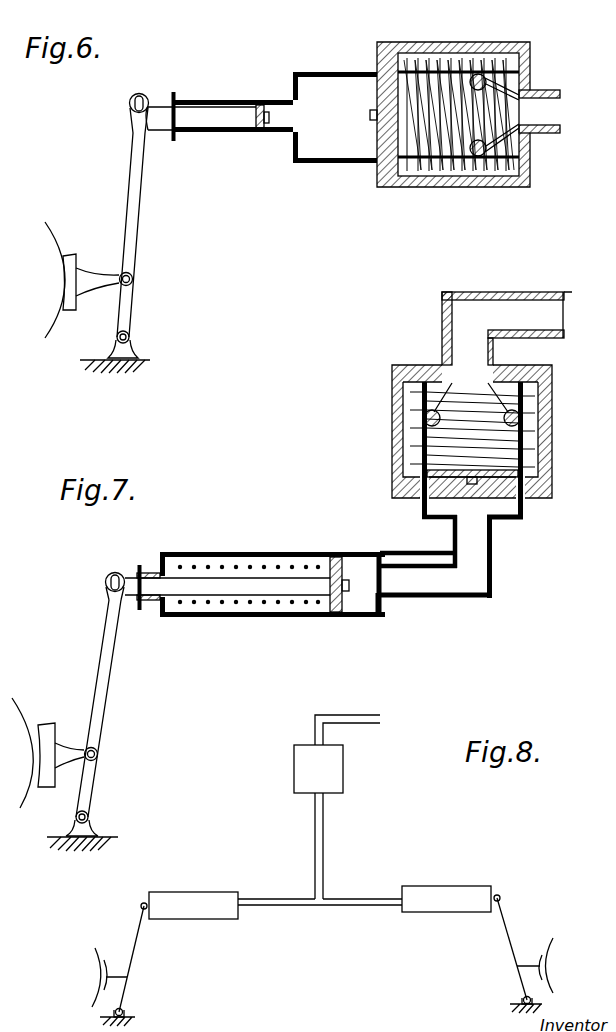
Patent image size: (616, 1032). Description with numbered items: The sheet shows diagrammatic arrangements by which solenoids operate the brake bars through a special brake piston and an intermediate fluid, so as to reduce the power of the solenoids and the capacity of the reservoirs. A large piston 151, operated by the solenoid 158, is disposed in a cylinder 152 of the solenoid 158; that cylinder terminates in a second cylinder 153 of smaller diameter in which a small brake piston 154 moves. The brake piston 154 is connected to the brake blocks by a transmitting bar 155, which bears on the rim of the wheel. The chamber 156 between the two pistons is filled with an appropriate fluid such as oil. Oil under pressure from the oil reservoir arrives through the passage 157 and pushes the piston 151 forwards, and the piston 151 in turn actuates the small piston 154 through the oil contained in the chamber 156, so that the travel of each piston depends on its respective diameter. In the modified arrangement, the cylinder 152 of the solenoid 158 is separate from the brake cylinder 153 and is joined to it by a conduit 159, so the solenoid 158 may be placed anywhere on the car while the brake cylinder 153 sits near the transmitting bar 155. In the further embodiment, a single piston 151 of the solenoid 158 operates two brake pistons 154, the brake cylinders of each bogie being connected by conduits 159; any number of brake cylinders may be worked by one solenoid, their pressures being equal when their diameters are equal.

In FIG. 6, the piston 151 is at (430, 80).
In FIG. 7, the piston 151 is at (396, 494).
In FIG. 8, the piston 151 is at (310, 752).
In FIG. 6, the cylinder of the solenoid 152 is at (333, 72).
In FIG. 7, the cylinder of the solenoid 152 is at (533, 519).
In FIG. 6, the second cylinder 153 is at (229, 137).
In FIG. 7, the second cylinder 153 is at (245, 552).
In FIG. 6, the piston 154 is at (210, 125).
In FIG. 7, the piston 154 is at (346, 613).
In FIG. 8, the piston 154 is at (208, 912).
In FIG. 6, the bar 155 is at (128, 220).
In FIG. 7, the bar 155 is at (104, 664).
In FIG. 6, the chamber 156 is at (327, 142).
In FIG. 6, the passage 157 is at (540, 103).
In FIG. 7, the passage 157 is at (460, 312).
In FIG. 6, the solenoid 158 is at (490, 168).
In FIG. 7, the solenoid 158 is at (532, 399).
In FIG. 7, the conduit 159 is at (462, 598).
In FIG. 8, the conduit 159 is at (325, 836).